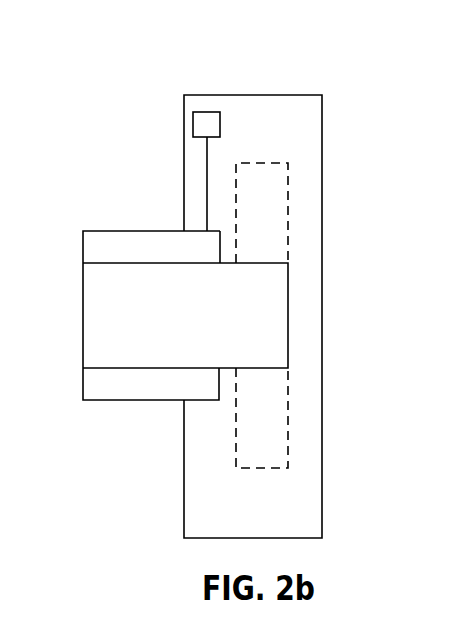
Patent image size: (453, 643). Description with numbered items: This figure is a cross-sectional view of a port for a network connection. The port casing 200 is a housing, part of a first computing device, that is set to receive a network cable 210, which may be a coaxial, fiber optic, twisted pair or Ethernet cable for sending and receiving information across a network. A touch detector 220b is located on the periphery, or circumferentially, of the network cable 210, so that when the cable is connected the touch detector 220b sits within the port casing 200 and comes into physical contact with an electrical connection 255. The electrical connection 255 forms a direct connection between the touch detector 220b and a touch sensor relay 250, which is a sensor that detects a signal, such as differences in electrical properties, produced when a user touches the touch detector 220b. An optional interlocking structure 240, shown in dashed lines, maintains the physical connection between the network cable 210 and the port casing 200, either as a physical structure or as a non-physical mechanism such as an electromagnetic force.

The port casing 200 is at (303, 113).
The touch sensor relay 250 is at (205, 120).
The electrical connection 255 is at (207, 170).
The touch detector 220b is at (100, 248).
The network cable 210 is at (258, 317).
The interlocking structure 240 is at (262, 213).